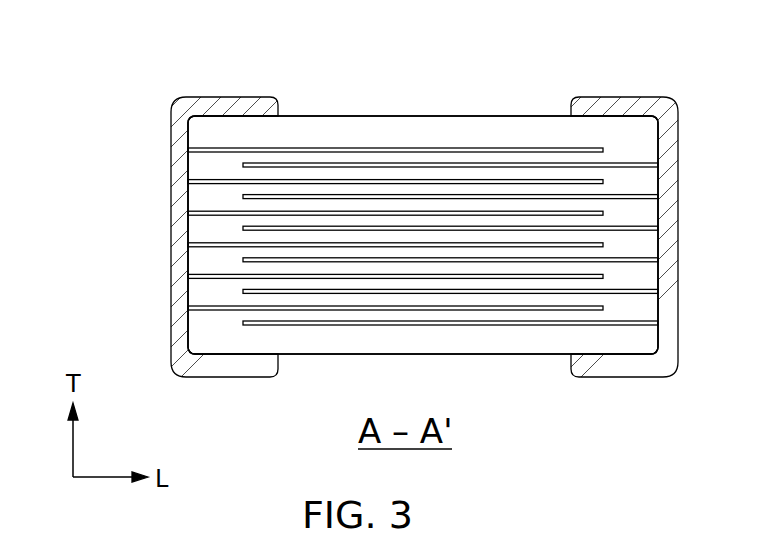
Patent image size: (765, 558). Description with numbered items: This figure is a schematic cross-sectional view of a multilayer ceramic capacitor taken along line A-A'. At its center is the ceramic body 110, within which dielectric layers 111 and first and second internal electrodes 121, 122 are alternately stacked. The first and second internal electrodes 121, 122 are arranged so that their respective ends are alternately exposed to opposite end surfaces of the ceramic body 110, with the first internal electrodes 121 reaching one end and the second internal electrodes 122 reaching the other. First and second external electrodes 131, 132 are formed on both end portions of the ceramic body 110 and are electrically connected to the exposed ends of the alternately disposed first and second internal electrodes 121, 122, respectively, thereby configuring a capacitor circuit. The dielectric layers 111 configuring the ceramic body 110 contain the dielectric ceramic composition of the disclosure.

The ceramic body 110 is at (425, 116).
The dielectric layer 111 is at (197, 165).
The first internal electrode 121 is at (228, 149).
The second internal electrode 122 is at (257, 167).
The first external electrode 131 is at (225, 106).
The second external electrode 132 is at (623, 107).